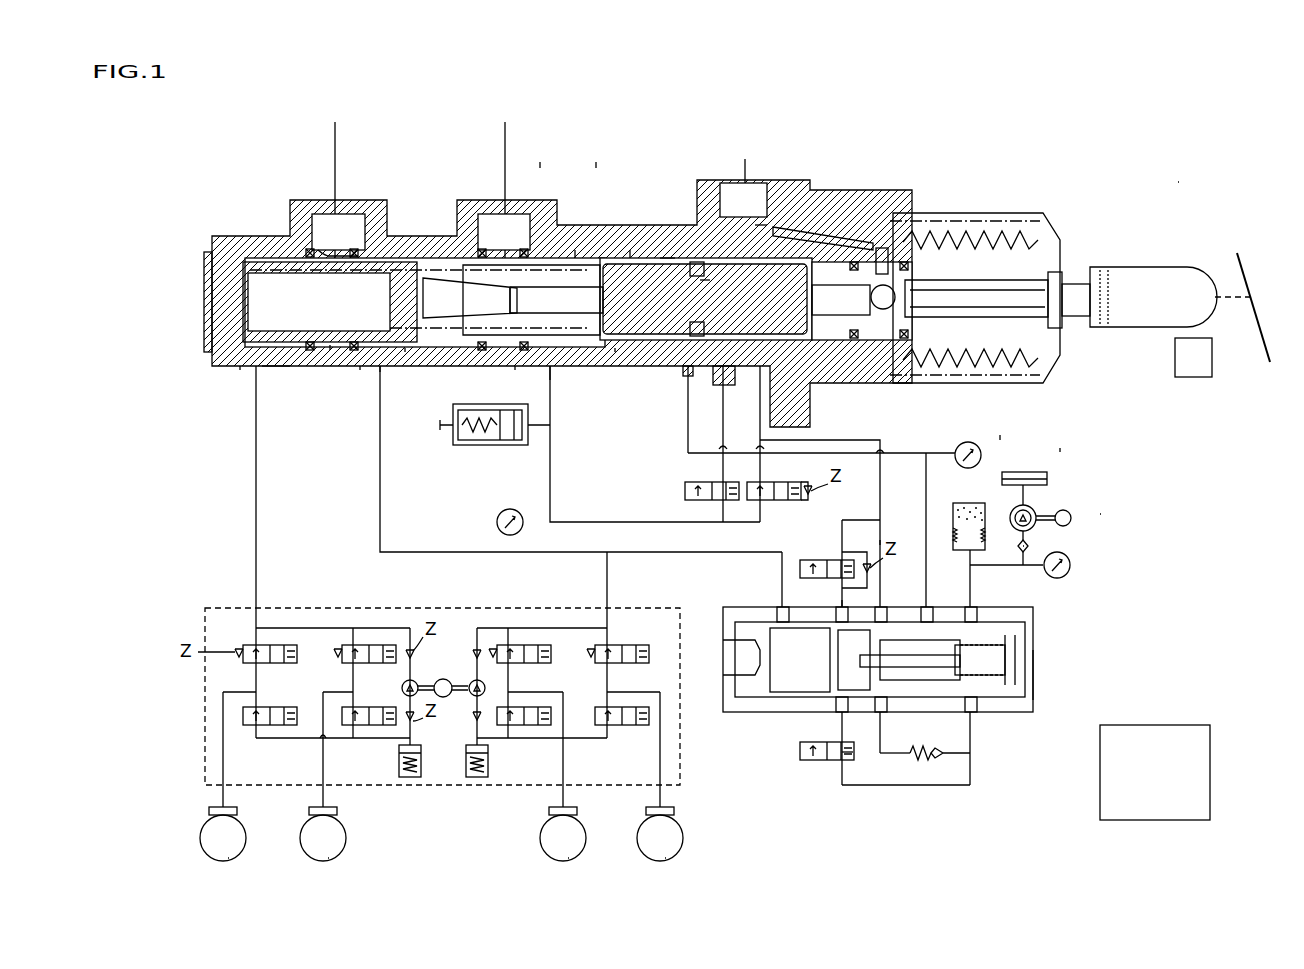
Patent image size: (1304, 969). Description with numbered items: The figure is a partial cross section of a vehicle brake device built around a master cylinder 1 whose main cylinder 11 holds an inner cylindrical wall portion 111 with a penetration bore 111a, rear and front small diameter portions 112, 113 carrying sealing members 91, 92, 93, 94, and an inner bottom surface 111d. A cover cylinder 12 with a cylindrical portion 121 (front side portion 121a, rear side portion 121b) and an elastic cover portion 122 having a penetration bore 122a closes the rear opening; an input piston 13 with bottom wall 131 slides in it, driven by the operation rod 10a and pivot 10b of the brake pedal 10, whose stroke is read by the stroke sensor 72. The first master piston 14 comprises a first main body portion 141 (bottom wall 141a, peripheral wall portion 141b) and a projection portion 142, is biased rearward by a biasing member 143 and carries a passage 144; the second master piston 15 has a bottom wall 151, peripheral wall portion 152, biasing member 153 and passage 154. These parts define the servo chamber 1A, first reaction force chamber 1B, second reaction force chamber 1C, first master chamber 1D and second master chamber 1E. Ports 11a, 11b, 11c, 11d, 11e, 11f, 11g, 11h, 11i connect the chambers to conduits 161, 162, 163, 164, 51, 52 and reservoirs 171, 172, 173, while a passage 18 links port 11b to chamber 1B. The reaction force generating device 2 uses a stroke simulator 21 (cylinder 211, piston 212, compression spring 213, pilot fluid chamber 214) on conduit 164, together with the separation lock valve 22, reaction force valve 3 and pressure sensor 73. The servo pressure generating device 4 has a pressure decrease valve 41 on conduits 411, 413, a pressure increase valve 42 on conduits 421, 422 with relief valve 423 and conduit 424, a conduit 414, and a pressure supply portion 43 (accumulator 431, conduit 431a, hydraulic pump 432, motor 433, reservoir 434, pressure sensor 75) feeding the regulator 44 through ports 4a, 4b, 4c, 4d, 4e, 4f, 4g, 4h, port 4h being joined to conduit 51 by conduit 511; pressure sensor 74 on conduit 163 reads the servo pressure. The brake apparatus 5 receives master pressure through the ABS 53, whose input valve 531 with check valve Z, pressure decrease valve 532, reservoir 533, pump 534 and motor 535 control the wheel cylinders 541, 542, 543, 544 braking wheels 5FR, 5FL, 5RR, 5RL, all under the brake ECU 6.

The master cylinder 1 is at (1187, 184).
The brake pedal 10 is at (1237, 268).
The operation rod 10a is at (968, 295).
The pivot 10b is at (955, 282).
The main cylinder 11 is at (230, 232).
The port 11a is at (758, 376).
The port 11b is at (760, 230).
The port 11c is at (720, 376).
The port 11d is at (684, 374).
The port 11e is at (565, 370).
The port 11f is at (505, 256).
The port 11g is at (385, 370).
The port 11h is at (340, 250).
The port 11i is at (245, 366).
The inner cylindrical wall portion 111 is at (715, 289).
The penetration bore 111a is at (665, 256).
The inner bottom surface 111d is at (208, 334).
The small diameter portion 112 is at (525, 372).
The small diameter portion 113 is at (367, 367).
The cover cylinder 12 is at (1095, 436).
The cylindrical portion 121 is at (1038, 421).
The front side portion 121a is at (858, 365).
The rear side portion 121b is at (905, 348).
The cover portion 122 is at (1020, 373).
The penetration bore 122a is at (1060, 278).
The input piston 13 is at (885, 283).
The bottom wall 131 is at (835, 243).
The first master piston 14 is at (610, 352).
The first main body portion 141 is at (616, 160).
The bottom wall 141a is at (635, 252).
The peripheral wall portion 141b is at (580, 252).
The projection portion 142 is at (765, 282).
The biasing member 143 is at (470, 256).
The passage 144 is at (480, 264).
The second master piston 15 is at (425, 278).
The bottom wall 151 is at (415, 350).
The peripheral wall portion 152 is at (335, 350).
The biasing member 153 is at (272, 262).
The passage 154 is at (333, 249).
The conduit 161 is at (812, 438).
The conduit 162 is at (721, 440).
The conduit 163 is at (685, 446).
The conduit 164 is at (550, 410).
The reservoir 171 is at (755, 153).
The reservoir 172 is at (515, 116).
The reservoir 173 is at (345, 116).
The passage 18 is at (865, 241).
The servo chamber 1A is at (665, 368).
The first reaction force chamber 1B is at (825, 363).
The second reaction force chamber 1C is at (625, 350).
The first master chamber 1D is at (451, 425).
The second master chamber 1E is at (276, 372).
The reaction force generating device 2 is at (468, 498).
The stroke simulator 21 is at (485, 406).
The cylinder 211 is at (495, 408).
The piston 212 is at (502, 442).
The compression spring 213 is at (470, 443).
The pilot fluid chamber 214 is at (515, 441).
The separation lock valve 22 is at (700, 478).
The reaction force valve 3 is at (757, 478).
The servo pressure generating device 4 is at (1044, 637).
The port 4a is at (980, 608).
The port 4b is at (975, 716).
The port 4c is at (932, 604).
The port 4d is at (885, 604).
The port 4e is at (887, 716).
The port 4f is at (845, 608).
The port 4g is at (848, 716).
The port 4h is at (780, 604).
The pressure decrease valve 41 is at (807, 560).
The conduit 411 is at (855, 518).
The conduit 413 is at (840, 596).
The conduit 414 is at (882, 542).
The pressure increase valve 42 is at (800, 762).
The conduit 421 is at (840, 726).
The conduit 422 is at (860, 788).
The relief valve 423 is at (932, 758).
The conduit 424 is at (880, 753).
The pressure supply portion 43 is at (1108, 518).
The accumulator 431 is at (960, 515).
The conduit 431a is at (975, 572).
The hydraulic pump 432 is at (1010, 519).
The motor 433 is at (1066, 515).
The reservoir 434 is at (1048, 478).
The regulator 44 is at (1033, 680).
The brake apparatus 5 is at (348, 592).
The conduit 51 is at (378, 494).
The conduit 511 is at (710, 553).
The conduit 52 is at (252, 504).
The ABS 53 is at (516, 608).
The input valve 531 is at (270, 644).
The pressure decrease valve 532 is at (268, 706).
The reservoir 533 is at (417, 758).
The pump 534 is at (413, 684).
The motor 535 is at (445, 679).
The wheel cylinder 541 is at (232, 813).
The wheel cylinder 542 is at (332, 813).
The wheel cylinder 543 is at (572, 813).
The wheel cylinder 544 is at (667, 813).
The front right wheel 5FR is at (228, 858).
The front left wheel 5FL is at (328, 858).
The rear right wheel 5RR is at (568, 858).
The rear left wheel 5RL is at (665, 858).
The brake ECU 6 is at (1191, 725).
The stroke sensor 72 is at (1193, 380).
The pressure sensor 73 is at (510, 513).
The pressure sensor 74 is at (960, 462).
The pressure sensor 75 is at (1060, 575).
The sealing member 91 is at (522, 249).
The sealing member 92 is at (480, 250).
The sealing member 93 is at (360, 250).
The sealing member 94 is at (310, 247).
The check valve Z is at (1030, 545).